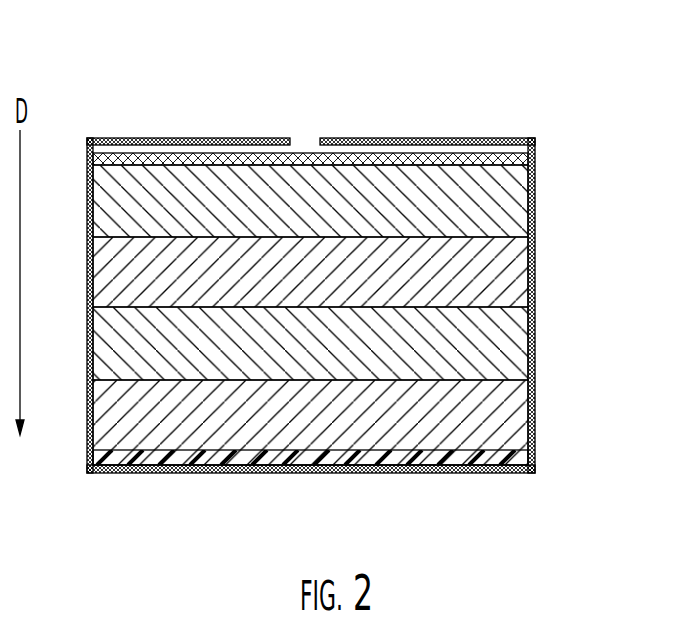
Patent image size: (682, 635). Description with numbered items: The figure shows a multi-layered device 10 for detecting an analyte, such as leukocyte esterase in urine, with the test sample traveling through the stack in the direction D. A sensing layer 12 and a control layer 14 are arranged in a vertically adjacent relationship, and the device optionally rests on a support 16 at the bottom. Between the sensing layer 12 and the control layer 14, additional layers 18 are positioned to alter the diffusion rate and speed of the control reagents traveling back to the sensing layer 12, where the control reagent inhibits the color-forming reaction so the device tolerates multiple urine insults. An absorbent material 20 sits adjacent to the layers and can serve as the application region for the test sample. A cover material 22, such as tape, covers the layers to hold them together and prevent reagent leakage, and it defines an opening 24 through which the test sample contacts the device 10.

The multi-layered device 10 is at (478, 103).
The sensing layer 12 is at (520, 273).
The control layer 14 is at (517, 423).
The support 16 is at (520, 457).
The additional layer 18 is at (513, 200).
The absorbent material 20 is at (533, 158).
The cover material 22 is at (161, 137).
The opening 24 is at (312, 138).